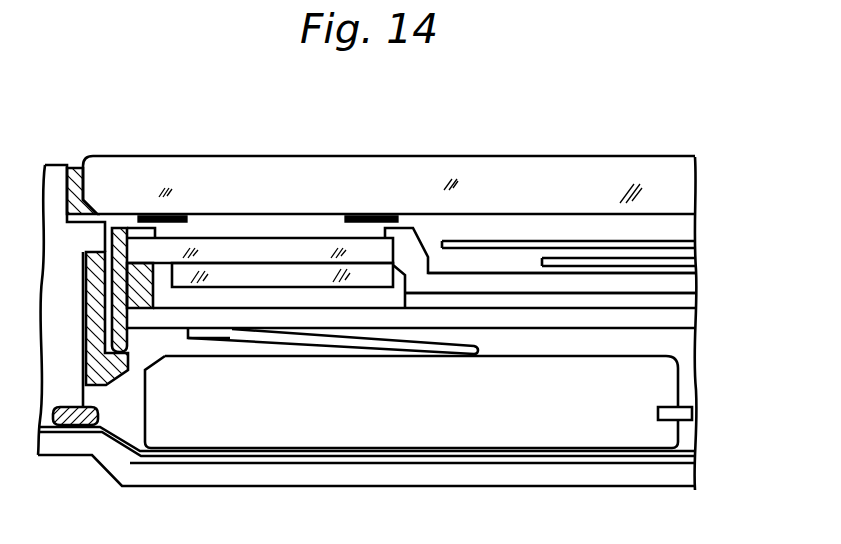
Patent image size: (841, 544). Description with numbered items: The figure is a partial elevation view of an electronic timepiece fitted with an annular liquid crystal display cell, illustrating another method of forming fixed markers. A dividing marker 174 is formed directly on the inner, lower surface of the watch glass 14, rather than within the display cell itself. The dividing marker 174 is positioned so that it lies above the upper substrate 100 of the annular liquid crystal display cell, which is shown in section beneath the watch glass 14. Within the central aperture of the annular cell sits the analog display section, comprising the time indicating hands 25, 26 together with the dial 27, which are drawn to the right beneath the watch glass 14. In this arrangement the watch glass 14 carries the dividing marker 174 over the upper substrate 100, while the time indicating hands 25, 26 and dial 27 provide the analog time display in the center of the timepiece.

The watch glass 14 is at (412, 172).
The dividing marker 174 is at (172, 215).
The upper substrate 100 is at (268, 248).
The dial 27 is at (485, 283).
The time indicating hand 25 is at (567, 243).
The time indicating hand 26 is at (630, 263).